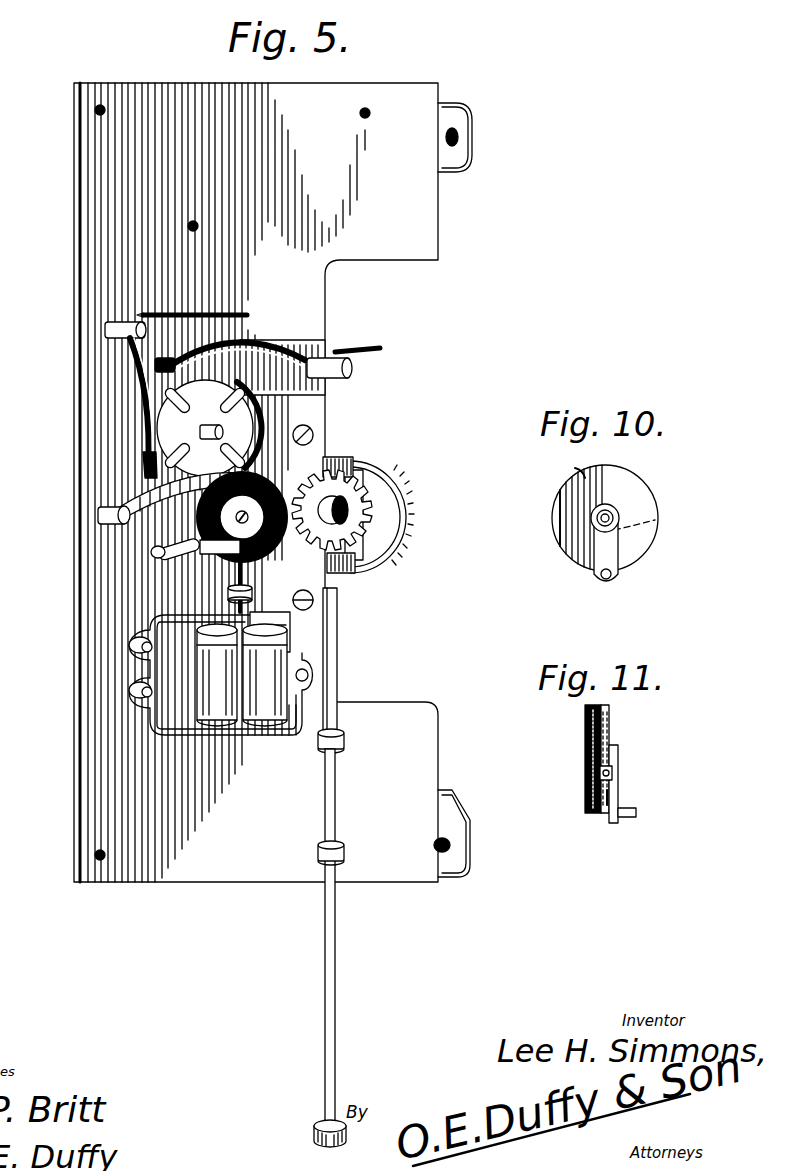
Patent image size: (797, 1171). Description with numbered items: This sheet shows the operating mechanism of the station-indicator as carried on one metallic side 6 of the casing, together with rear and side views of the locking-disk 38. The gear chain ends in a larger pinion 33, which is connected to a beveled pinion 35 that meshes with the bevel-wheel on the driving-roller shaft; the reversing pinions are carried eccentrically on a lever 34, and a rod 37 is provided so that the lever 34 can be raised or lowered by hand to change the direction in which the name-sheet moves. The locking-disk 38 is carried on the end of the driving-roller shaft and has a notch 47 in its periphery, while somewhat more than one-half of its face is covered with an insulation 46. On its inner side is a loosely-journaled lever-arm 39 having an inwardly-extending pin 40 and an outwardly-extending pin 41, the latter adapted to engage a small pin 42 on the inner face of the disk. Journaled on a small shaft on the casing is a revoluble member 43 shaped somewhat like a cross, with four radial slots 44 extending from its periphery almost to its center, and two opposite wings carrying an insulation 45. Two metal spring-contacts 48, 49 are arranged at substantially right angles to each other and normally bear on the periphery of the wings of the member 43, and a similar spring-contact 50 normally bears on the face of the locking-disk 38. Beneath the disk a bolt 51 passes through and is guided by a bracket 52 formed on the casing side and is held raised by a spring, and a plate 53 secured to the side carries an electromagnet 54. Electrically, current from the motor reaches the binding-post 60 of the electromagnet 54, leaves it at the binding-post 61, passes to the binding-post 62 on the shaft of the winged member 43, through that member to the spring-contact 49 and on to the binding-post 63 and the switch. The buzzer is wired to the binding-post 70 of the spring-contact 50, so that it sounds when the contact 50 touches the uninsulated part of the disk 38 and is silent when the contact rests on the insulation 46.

In FIG. 5, the side 6 is at (273, 482).
In FIG. 5, the pinion 33 is at (375, 490).
In FIG. 5, the lever 34 is at (338, 675).
In FIG. 5, the beveled pinion 35 is at (340, 462).
In FIG. 5, the rod 37 is at (337, 940).
In FIG. 5, the locking-disk 38 is at (205, 560).
In FIG. 10, the locking-disk 38 is at (644, 508).
In FIG. 11, the locking-disk 38 is at (606, 745).
In FIG. 5, the lever-arm 39 is at (195, 555).
In FIG. 10, the lever-arm 39 is at (622, 570).
In FIG. 11, the lever-arm 39 is at (618, 796).
In FIG. 5, the inwardly-extending pin 40 is at (152, 551).
In FIG. 10, the inwardly-extending pin 40 is at (608, 580).
In FIG. 11, the inwardly-extending pin 40 is at (636, 813).
In FIG. 11, the outwardly-extending pin 41 is at (608, 806).
In FIG. 10, the pin 42 is at (592, 538).
In FIG. 11, the pin 42 is at (612, 776).
In FIG. 5, the revoluble member 43 is at (205, 426).
In FIG. 5, the radial slots 44 is at (325, 396).
In FIG. 5, the insulation 45 is at (255, 431).
In FIG. 5, the insulation 46 is at (295, 572).
In FIG. 11, the insulation 46 is at (585, 745).
In FIG. 5, the notch 47 is at (258, 482).
In FIG. 10, the notch 47 is at (582, 479).
In FIG. 5, the spring-contact 48 is at (150, 380).
In FIG. 5, the spring-contact 49 is at (268, 342).
In FIG. 5, the spring-contact 50 is at (128, 483).
In FIG. 5, the bolt 51 is at (312, 596).
In FIG. 5, the bracket 52 is at (200, 620).
In FIG. 5, the plate 53 is at (288, 620).
In FIG. 5, the electromagnet 54 is at (262, 722).
In FIG. 5, the binding-post 60 is at (128, 695).
In FIG. 5, the binding-post 61 is at (130, 658).
In FIG. 5, the binding-post 62 is at (200, 433).
In FIG. 5, the binding-post 63 is at (356, 369).
In FIG. 5, the binding-post 70 is at (98, 515).